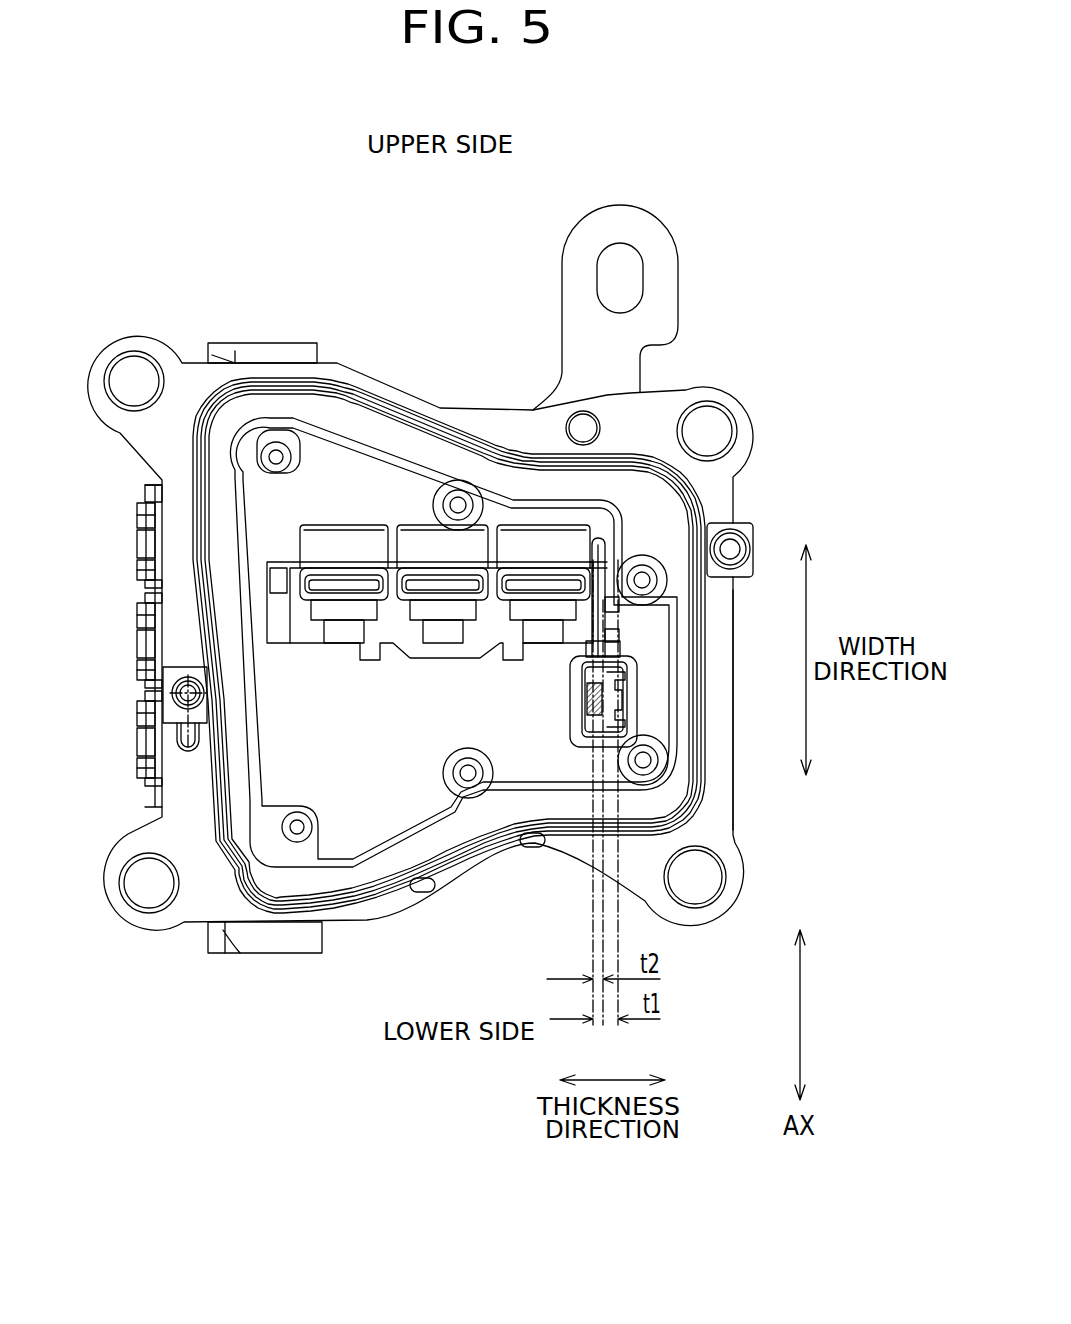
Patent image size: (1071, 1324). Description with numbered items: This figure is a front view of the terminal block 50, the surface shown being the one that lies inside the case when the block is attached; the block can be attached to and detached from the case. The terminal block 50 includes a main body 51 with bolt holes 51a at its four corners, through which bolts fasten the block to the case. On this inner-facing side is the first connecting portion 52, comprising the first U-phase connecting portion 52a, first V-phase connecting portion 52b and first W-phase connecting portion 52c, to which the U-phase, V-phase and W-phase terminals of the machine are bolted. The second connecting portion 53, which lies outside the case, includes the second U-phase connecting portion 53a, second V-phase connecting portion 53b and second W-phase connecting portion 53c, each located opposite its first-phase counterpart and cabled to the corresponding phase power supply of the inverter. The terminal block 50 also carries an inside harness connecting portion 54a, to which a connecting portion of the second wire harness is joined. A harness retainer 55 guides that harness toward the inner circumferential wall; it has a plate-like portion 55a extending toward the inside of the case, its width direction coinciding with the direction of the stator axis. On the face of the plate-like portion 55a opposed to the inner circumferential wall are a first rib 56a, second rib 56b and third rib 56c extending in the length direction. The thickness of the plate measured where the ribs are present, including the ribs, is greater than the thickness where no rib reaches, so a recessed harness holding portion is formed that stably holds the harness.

The terminal block 50 is at (248, 1008).
The main body 51 is at (640, 320).
The bolt holes 51a is at (140, 385).
The first connecting portion 52 is at (523, 247).
The first U-phase connecting portion 52a is at (553, 567).
The first V-phase connecting portion 52b is at (445, 572).
The first W-phase connecting portion 52c is at (343, 572).
The second connecting portion 53 is at (93, 495).
The second U-phase connecting portion 53a is at (132, 551).
The second V-phase connecting portion 53b is at (132, 651).
The second W-phase connecting portion 53c is at (132, 741).
The inside harness connecting portion 54a is at (640, 715).
The harness retainer 55 is at (642, 622).
The plate-like portion 55a is at (530, 847).
The first rib 56a is at (604, 568).
The second rib 56b is at (623, 607).
The third rib 56c is at (645, 638).